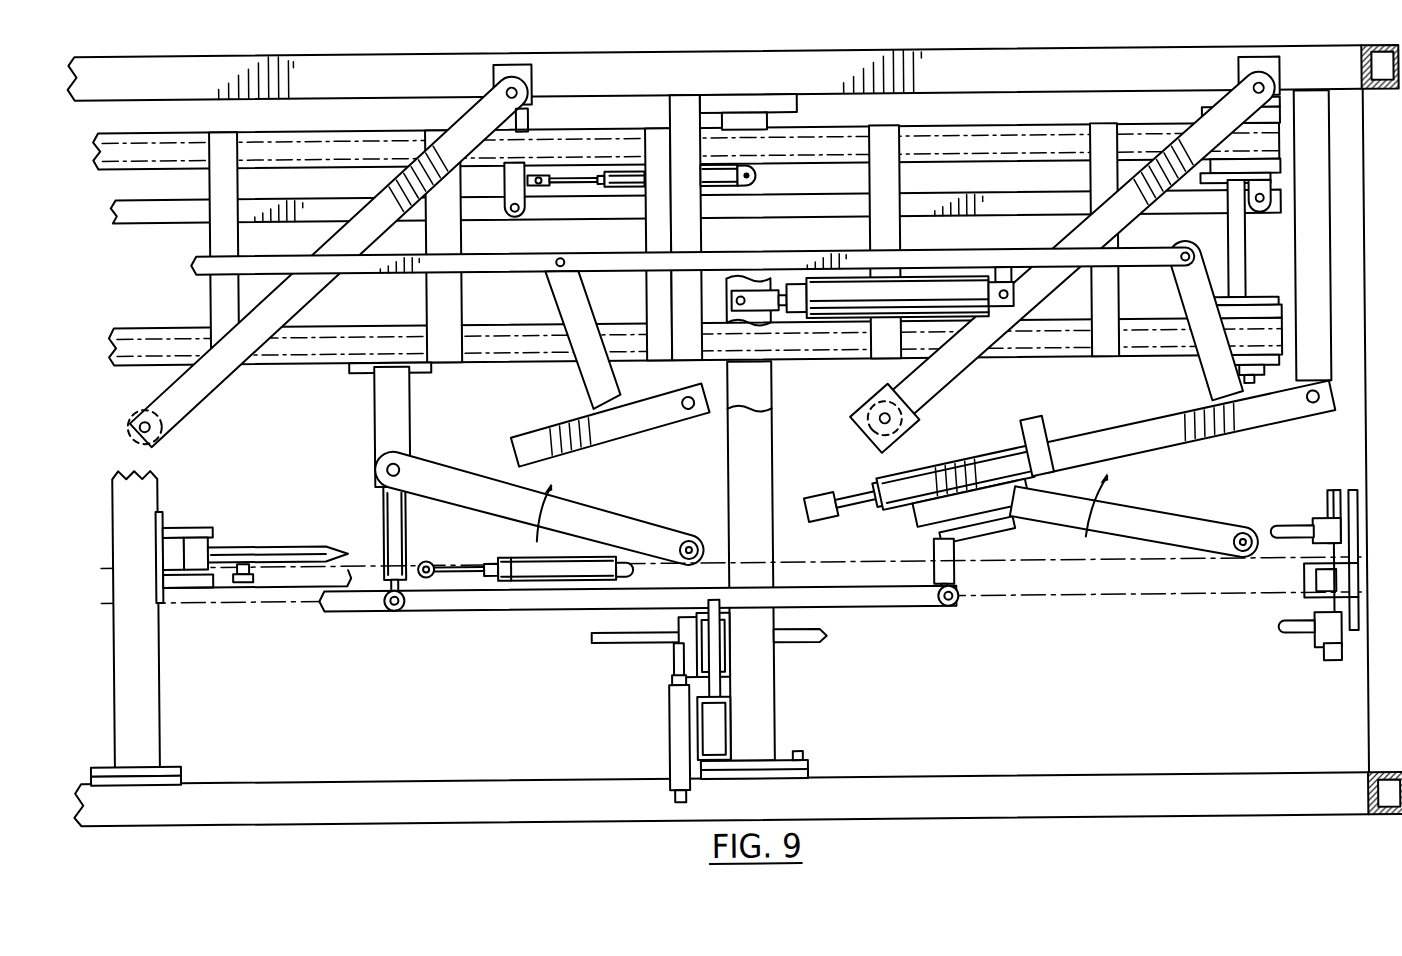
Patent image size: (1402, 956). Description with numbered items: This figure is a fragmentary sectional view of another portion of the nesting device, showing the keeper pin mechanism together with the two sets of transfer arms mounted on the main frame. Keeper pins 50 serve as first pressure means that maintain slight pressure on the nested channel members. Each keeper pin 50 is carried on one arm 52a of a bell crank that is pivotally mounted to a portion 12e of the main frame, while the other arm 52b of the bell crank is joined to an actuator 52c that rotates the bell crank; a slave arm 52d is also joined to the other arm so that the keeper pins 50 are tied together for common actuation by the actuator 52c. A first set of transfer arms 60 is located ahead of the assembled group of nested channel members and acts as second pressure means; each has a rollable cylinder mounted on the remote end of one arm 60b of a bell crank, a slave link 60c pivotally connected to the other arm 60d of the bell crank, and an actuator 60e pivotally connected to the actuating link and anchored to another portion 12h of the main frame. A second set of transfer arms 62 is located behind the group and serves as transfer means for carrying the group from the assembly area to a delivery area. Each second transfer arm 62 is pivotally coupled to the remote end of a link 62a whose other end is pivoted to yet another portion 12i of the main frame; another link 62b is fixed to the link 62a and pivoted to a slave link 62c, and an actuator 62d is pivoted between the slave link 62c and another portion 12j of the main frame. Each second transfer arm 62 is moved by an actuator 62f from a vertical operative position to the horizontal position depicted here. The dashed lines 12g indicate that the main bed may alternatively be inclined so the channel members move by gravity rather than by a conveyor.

The dashed lines 12g is at (527, 72).
The portion of the main frame 12h is at (760, 191).
The portion of the main frame 12i is at (1320, 333).
The portion of the main frame 12j is at (757, 335).
The portion of the main frame 12e is at (385, 420).
The keeper pins 50 is at (690, 546).
The arm of bell crank 52a is at (460, 488).
The other arm of bell crank 52b is at (390, 512).
The actuator 52c is at (518, 562).
The slave arm 52d is at (474, 608).
The first set of transfer arms 60 is at (218, 396).
The arm of bell crank 60b is at (400, 190).
The slave link 60c is at (575, 209).
The other arm of bell crank 60d is at (520, 121).
The actuator 60e is at (642, 178).
The second transfer arms 62 is at (990, 535).
The link 62a is at (620, 424).
The link 62b is at (1195, 282).
The slave link 62c is at (792, 264).
The actuator 62d is at (924, 300).
The actuator 62f is at (990, 463).